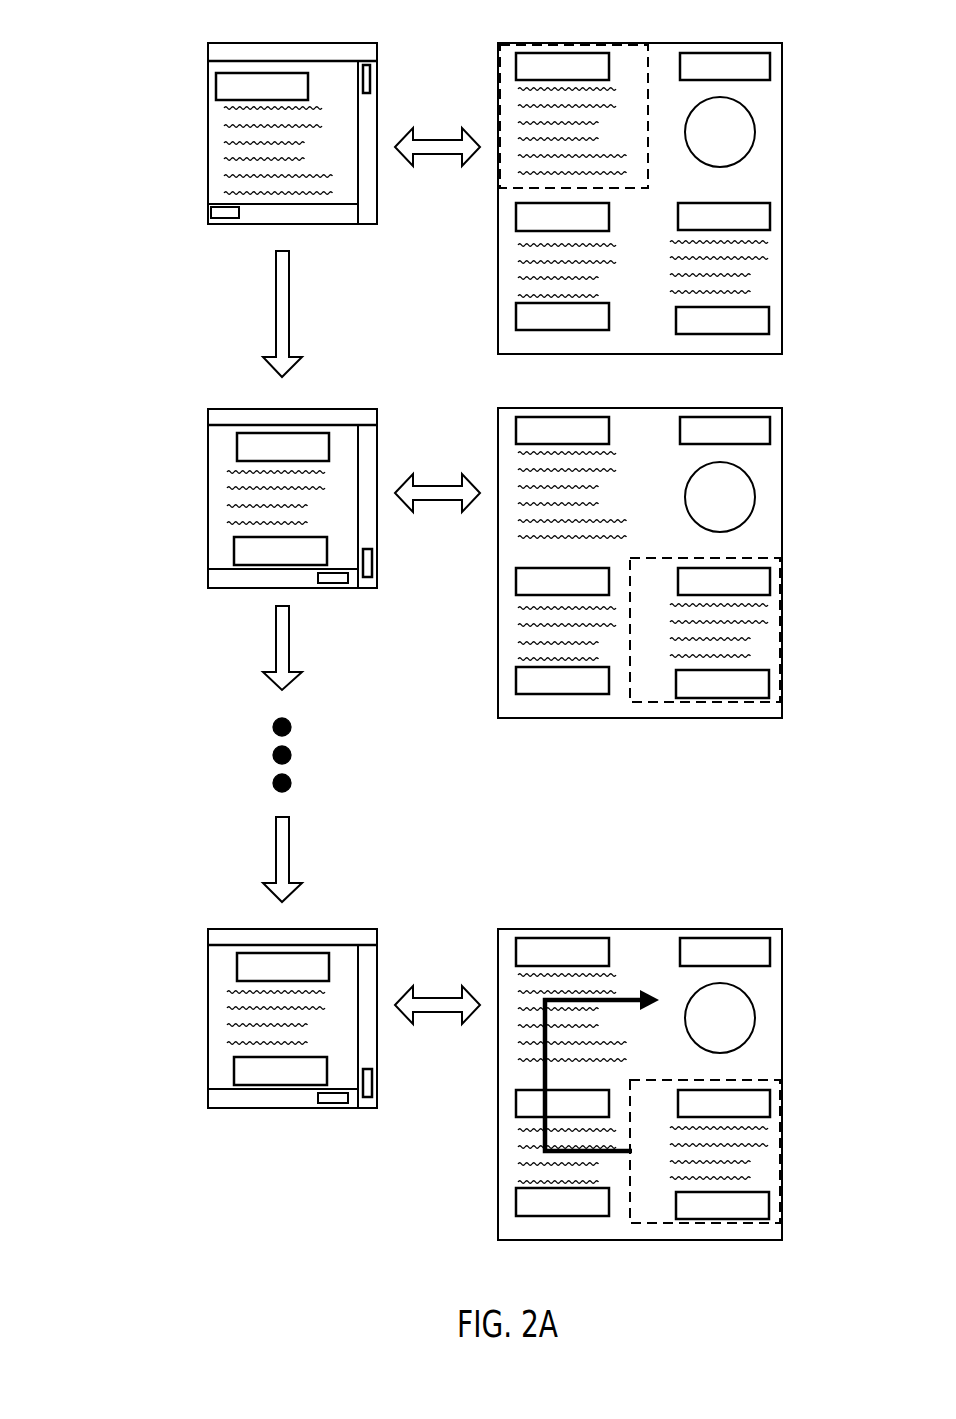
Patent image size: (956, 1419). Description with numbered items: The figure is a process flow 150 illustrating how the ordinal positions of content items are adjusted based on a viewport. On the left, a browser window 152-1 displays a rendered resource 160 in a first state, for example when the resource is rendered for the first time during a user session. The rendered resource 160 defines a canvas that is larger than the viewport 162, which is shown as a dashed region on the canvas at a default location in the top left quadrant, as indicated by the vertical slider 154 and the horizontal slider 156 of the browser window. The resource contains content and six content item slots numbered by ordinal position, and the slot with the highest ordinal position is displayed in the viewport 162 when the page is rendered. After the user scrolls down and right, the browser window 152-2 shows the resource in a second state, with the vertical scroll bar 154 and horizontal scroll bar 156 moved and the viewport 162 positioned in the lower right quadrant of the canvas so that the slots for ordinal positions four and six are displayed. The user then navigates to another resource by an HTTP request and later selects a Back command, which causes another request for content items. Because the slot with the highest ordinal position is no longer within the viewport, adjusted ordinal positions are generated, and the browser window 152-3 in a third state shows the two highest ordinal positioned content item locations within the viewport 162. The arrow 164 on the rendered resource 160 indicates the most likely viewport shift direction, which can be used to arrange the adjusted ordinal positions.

The process flow 150 is at (92, 30).
The browser window 152-1 is at (207, 60).
The browser window 152-2 is at (208, 439).
The browser window 152-3 is at (208, 960).
The vertical slider 154 is at (373, 78).
The horizontal slider 156 is at (208, 213).
The rendered resource 160 is at (782, 98).
The viewport 162 is at (650, 52).
The arrow 164 is at (632, 997).